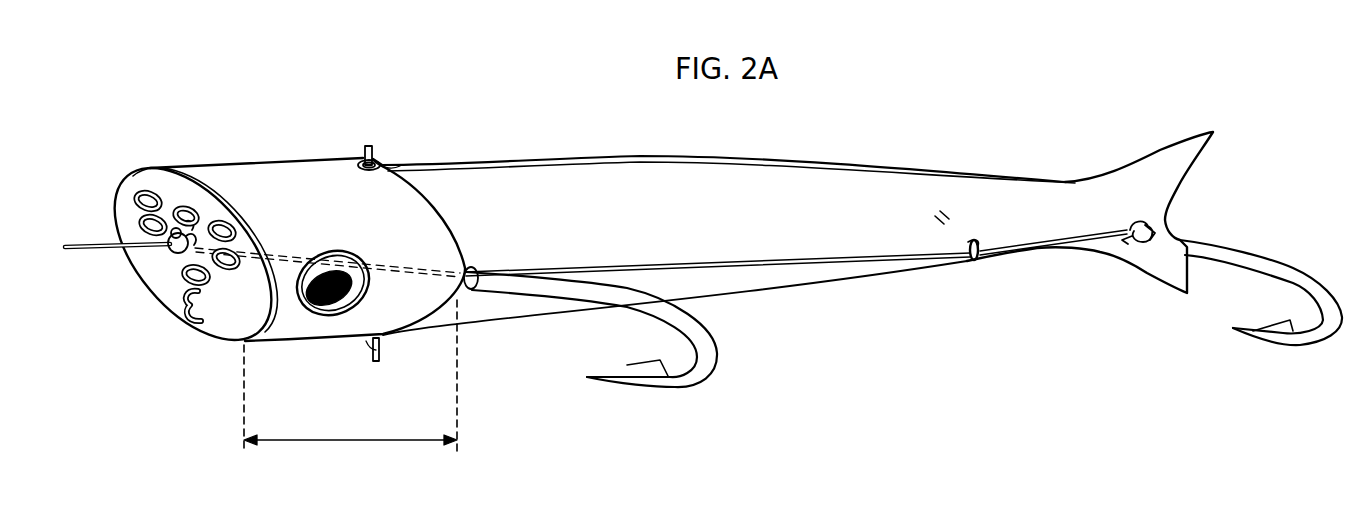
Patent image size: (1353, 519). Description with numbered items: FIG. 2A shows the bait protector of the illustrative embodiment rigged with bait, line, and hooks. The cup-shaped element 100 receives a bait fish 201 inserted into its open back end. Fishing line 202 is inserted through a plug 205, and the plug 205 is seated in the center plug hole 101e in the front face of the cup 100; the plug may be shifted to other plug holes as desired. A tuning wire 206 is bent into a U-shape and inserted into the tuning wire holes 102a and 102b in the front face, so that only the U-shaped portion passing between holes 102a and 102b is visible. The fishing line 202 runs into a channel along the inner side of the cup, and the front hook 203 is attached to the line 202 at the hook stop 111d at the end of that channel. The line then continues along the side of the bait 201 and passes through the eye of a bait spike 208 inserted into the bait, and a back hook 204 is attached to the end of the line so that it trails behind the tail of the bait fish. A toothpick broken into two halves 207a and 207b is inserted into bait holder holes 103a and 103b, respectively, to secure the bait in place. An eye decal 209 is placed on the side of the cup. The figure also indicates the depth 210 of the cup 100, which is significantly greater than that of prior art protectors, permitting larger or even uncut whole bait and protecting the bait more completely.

The cup-shaped element 100 is at (277, 128).
The center plug hole 101e is at (200, 232).
The tuning wire hole 102a is at (190, 296).
The tuning wire hole 102b is at (203, 303).
The bait holder hole 103a is at (366, 160).
The bait holder hole 103b is at (382, 345).
The hook stop 111d is at (472, 292).
The bait fish 201 is at (745, 185).
The fishing line 202 is at (95, 250).
The front hook 203 is at (712, 352).
The back hook 204 is at (1278, 340).
The plug 205 is at (176, 236).
The tuning wire 206 is at (187, 298).
The toothpick half 207a is at (380, 163).
The toothpick half 207b is at (368, 351).
The bait spike 208 is at (970, 242).
The eye decal 209 is at (347, 263).
The depth 210 is at (363, 445).